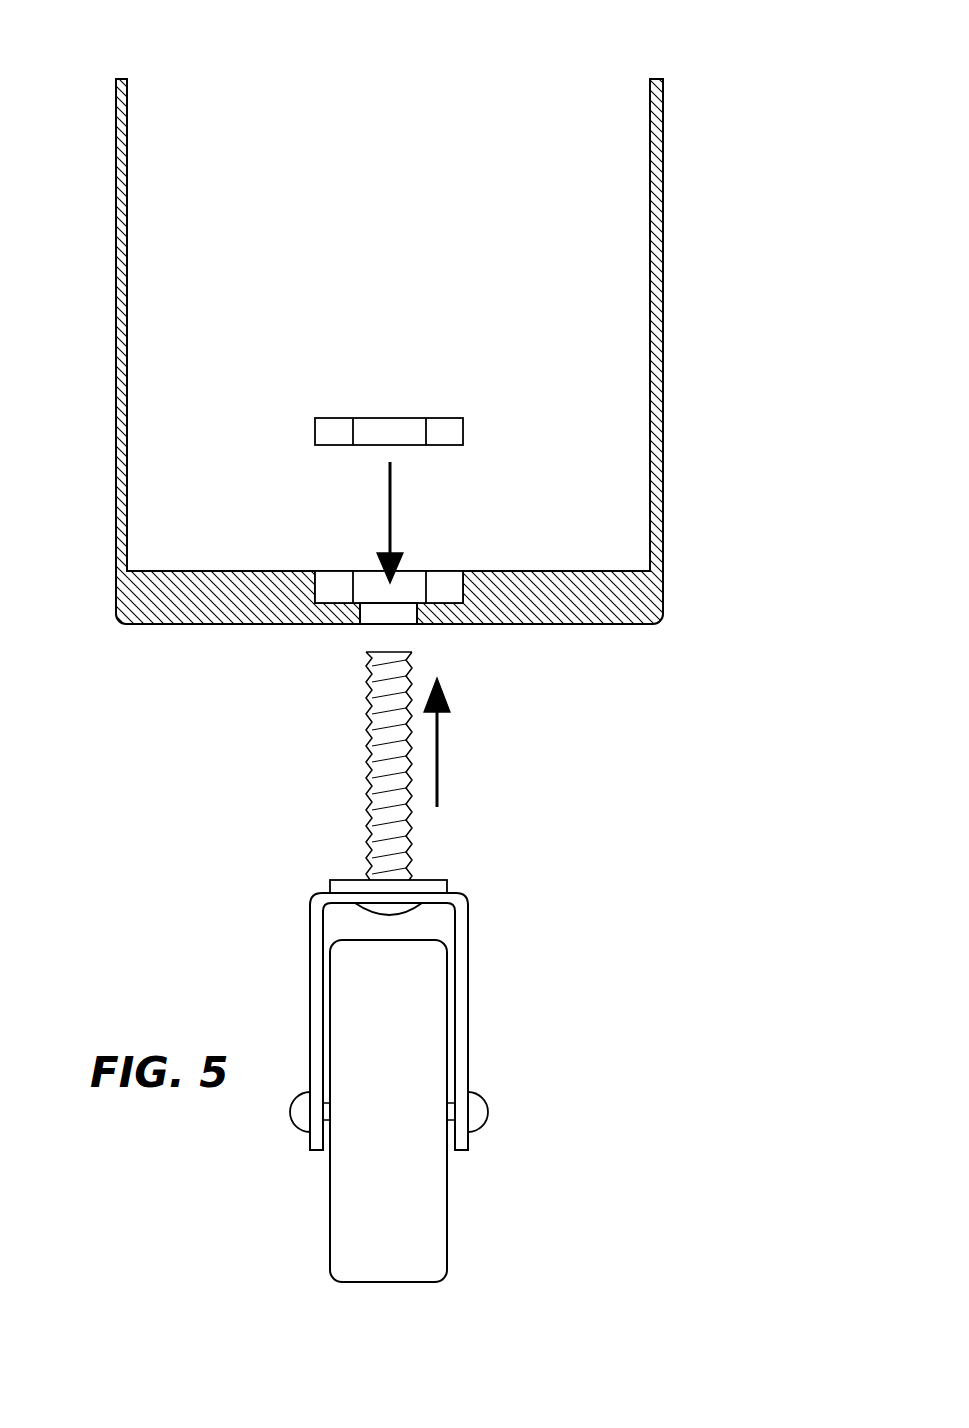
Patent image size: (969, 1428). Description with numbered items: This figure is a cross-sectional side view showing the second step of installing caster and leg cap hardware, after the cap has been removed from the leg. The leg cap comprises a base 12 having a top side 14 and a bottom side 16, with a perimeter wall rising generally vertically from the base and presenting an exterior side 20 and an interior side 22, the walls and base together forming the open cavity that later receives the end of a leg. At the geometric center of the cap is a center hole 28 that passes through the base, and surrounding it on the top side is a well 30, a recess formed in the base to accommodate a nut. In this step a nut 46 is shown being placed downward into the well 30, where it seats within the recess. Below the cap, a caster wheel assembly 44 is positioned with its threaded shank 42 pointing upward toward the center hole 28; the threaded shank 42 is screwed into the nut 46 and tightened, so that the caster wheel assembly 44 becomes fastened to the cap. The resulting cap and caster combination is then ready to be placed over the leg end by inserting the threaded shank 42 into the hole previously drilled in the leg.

The base 12 is at (163, 628).
The top side 14 is at (114, 506).
The bottom side 16 is at (569, 46).
The exterior side 20 is at (108, 117).
The interior side 22 is at (136, 92).
The center hole 28 is at (375, 617).
The well 30 is at (438, 598).
The threaded shank 42 is at (365, 820).
The caster wheel assembly 44 is at (310, 935).
The nut 46 is at (443, 417).